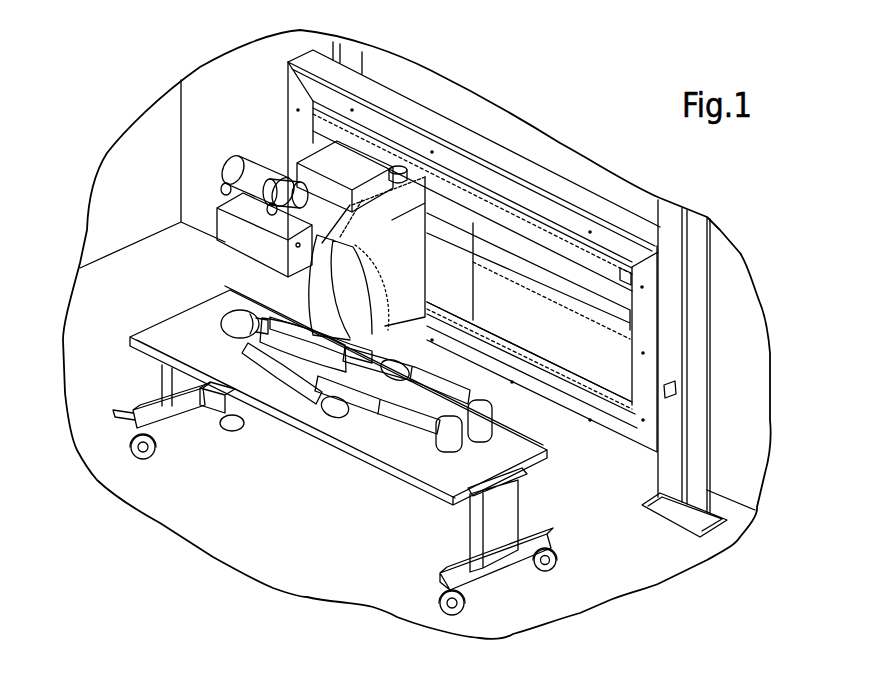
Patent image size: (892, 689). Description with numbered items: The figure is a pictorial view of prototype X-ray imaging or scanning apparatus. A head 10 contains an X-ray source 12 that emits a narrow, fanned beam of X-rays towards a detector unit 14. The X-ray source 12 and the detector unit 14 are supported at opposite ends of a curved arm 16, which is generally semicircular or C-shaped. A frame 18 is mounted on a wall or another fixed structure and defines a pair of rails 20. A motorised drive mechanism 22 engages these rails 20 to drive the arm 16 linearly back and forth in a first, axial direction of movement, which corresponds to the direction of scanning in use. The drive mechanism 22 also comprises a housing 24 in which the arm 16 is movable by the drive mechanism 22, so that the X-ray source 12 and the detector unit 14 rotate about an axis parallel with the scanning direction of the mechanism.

The head 10 is at (234, 243).
The X-ray source 12 is at (280, 177).
The detector unit 14 is at (207, 418).
The curved arm 16 is at (410, 372).
The frame 18 is at (670, 348).
The rails 20 is at (500, 340).
The motorised drive mechanism 22 is at (393, 180).
The housing 24 is at (447, 213).